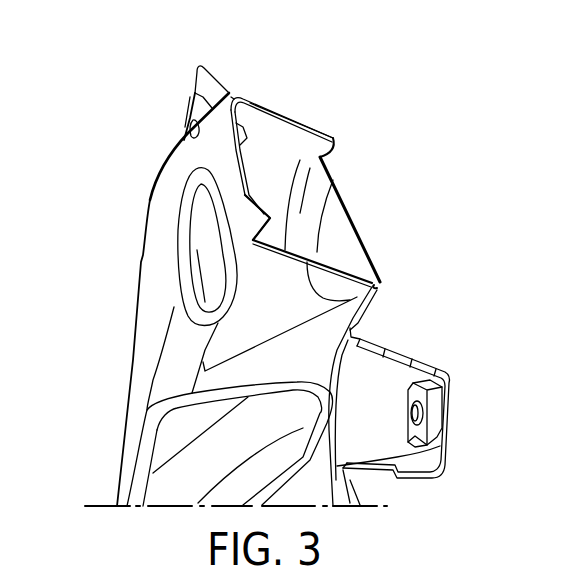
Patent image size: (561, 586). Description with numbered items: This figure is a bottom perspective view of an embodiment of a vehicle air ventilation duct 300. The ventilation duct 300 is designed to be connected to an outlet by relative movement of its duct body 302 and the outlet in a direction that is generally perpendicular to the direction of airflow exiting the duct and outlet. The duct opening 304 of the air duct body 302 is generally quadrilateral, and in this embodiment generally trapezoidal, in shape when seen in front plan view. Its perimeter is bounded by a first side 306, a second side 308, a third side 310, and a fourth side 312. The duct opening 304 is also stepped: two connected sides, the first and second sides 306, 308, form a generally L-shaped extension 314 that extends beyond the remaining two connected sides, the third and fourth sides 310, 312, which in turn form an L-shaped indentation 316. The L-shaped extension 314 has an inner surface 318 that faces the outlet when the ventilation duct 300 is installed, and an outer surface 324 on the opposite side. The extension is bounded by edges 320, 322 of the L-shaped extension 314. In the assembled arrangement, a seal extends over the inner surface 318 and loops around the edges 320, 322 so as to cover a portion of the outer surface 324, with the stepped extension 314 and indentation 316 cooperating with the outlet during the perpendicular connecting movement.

The vehicle air ventilation duct 300 is at (103, 389).
The duct body 302 is at (143, 418).
The duct opening 304 is at (327, 177).
The first side 306 is at (235, 142).
The second side 308 is at (270, 106).
The third side 310 is at (363, 247).
The fourth side 312 is at (353, 298).
The L-shaped extension 314 is at (230, 95).
The L-shaped indentation 316 is at (379, 283).
The inner surface 318 is at (297, 130).
The edge 320 is at (330, 147).
The edge 322 is at (267, 218).
The outer surface 324 is at (233, 170).